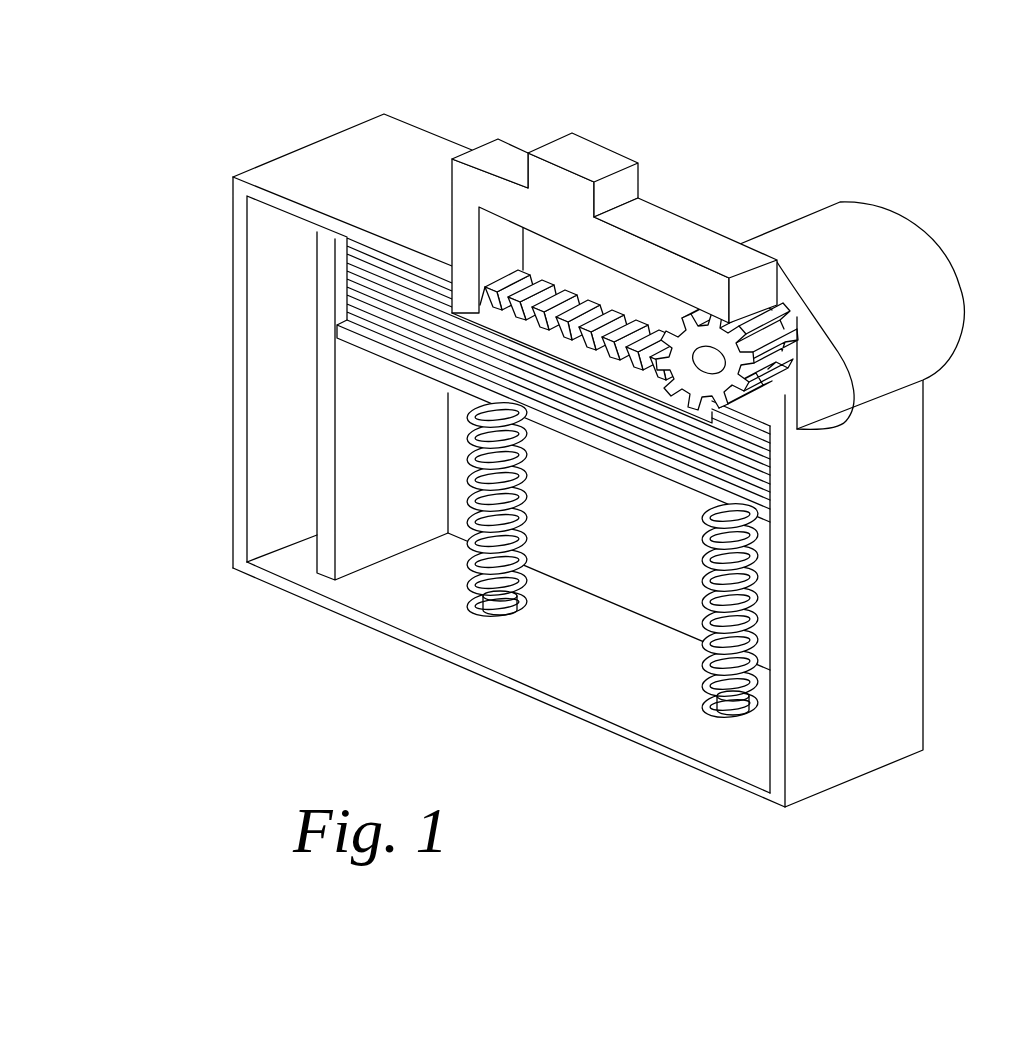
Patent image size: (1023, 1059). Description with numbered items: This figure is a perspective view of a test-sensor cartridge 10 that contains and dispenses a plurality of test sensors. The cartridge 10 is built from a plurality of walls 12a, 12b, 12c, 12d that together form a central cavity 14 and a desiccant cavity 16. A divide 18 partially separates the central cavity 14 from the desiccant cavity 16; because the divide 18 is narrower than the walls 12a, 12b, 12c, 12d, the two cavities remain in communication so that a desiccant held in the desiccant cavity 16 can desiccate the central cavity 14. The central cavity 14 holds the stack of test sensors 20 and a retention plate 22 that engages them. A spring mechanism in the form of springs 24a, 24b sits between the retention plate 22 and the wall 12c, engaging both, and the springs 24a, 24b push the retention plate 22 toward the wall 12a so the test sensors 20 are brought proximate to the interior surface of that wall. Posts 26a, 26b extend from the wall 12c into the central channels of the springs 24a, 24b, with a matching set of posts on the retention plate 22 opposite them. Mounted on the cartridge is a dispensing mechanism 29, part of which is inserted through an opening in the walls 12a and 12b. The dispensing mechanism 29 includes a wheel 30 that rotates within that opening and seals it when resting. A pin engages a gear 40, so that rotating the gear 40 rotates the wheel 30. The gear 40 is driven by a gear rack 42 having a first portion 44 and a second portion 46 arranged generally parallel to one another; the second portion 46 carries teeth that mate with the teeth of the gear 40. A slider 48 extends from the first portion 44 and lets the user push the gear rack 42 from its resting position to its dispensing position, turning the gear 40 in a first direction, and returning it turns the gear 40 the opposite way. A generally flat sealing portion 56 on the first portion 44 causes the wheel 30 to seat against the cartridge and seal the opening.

The test-sensor cartridge 10 is at (565, 457).
The wall 12a is at (353, 140).
The wall 12b is at (910, 713).
The wall 12c is at (278, 582).
The wall 12d is at (238, 317).
The central cavity 14 is at (610, 663).
The desiccant cavity 16 is at (282, 388).
The divide 18 is at (325, 553).
The test sensors 20 is at (358, 258).
The retention plate 22 is at (458, 390).
The spring 24a is at (487, 610).
The spring 24b is at (713, 713).
The post 26a is at (503, 597).
The post 26b is at (732, 703).
The dispensing mechanism 29 is at (810, 466).
The wheel 30 is at (870, 220).
The gear 40 is at (762, 372).
The gear rack 42 is at (614, 184).
The first portion 44 is at (675, 225).
The second portion 46 is at (600, 365).
The slider 48 is at (588, 148).
The sealing portion 56 is at (722, 325).